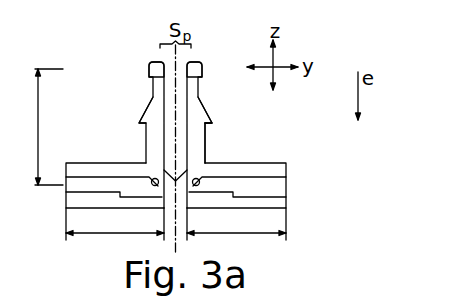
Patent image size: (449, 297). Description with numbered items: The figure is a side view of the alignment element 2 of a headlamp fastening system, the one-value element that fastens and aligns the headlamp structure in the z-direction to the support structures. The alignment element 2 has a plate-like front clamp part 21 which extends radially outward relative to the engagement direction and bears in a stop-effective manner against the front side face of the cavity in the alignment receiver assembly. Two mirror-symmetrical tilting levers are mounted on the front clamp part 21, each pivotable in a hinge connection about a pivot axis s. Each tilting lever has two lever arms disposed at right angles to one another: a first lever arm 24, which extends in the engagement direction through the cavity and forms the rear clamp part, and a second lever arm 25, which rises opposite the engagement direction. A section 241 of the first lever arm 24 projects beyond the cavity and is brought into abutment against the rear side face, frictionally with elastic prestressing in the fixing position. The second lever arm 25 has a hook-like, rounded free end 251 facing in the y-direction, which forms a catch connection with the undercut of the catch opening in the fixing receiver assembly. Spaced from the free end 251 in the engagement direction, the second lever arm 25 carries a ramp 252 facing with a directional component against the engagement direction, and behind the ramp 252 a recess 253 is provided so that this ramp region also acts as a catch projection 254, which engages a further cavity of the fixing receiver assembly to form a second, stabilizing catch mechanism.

The alignment element 2 is at (96, 67).
The front clamp part 21 is at (287, 167).
The first lever arm 24 is at (176, 233).
The second lever arm 25 is at (36, 127).
The section of the first lever arm 241 is at (67, 197).
The free end 251 is at (150, 62).
The ramp 252 is at (139, 121).
The recess 253 is at (206, 134).
The catch projection 254 is at (228, 124).
The pivot axis s is at (155, 179).